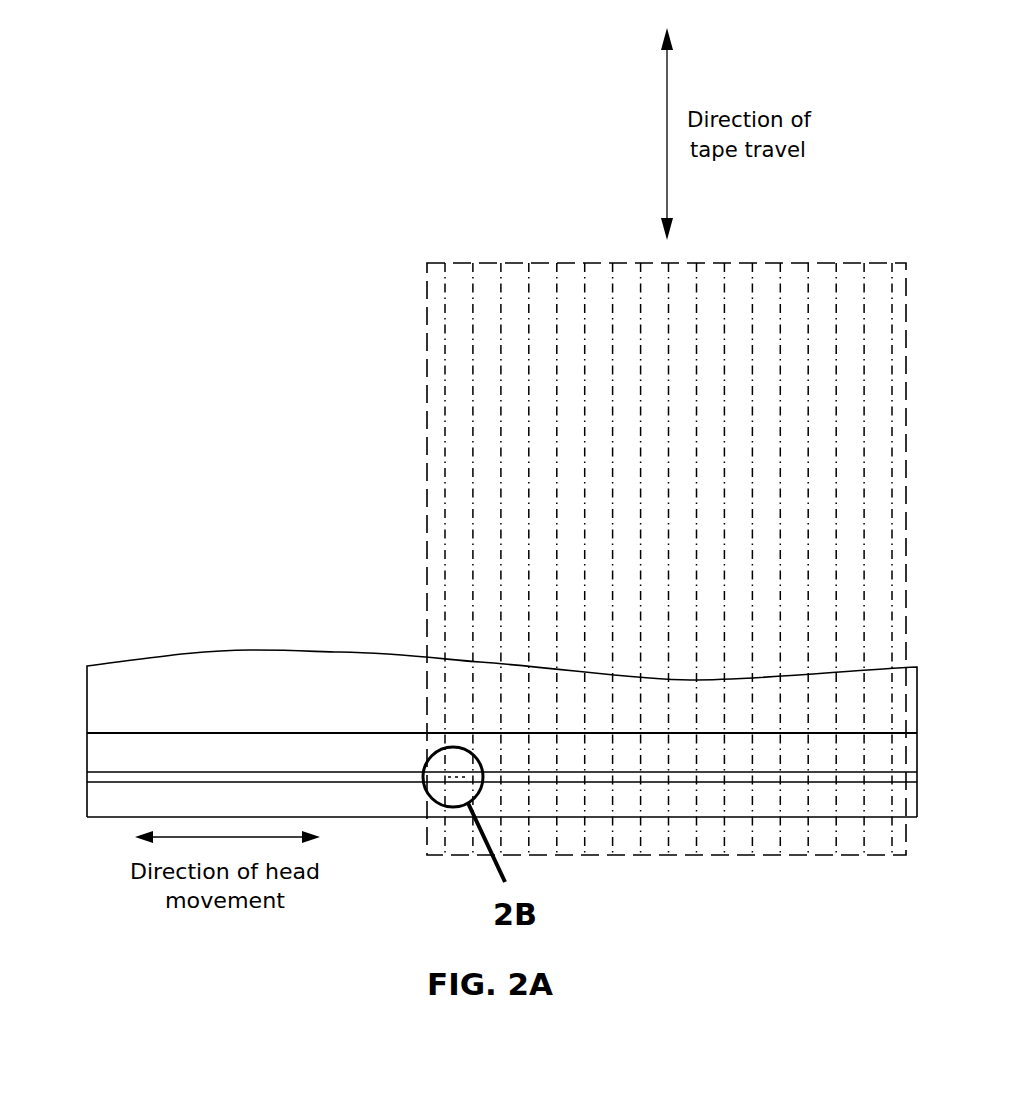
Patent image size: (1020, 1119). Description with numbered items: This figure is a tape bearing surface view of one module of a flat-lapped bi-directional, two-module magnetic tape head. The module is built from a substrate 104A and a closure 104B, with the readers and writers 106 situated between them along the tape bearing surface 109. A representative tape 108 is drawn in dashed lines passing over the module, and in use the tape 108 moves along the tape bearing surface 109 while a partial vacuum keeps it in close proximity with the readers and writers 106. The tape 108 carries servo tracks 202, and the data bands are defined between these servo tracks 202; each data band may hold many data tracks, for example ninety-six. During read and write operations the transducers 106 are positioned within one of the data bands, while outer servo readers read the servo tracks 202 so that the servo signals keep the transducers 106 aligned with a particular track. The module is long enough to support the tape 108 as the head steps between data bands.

The tape 108 is at (427, 355).
The servo tracks 202 is at (552, 485).
The substrate 104A is at (247, 650).
The closure 104B is at (87, 800).
The tape bearing surface 109 is at (316, 757).
The readers and writers 106 is at (420, 776).